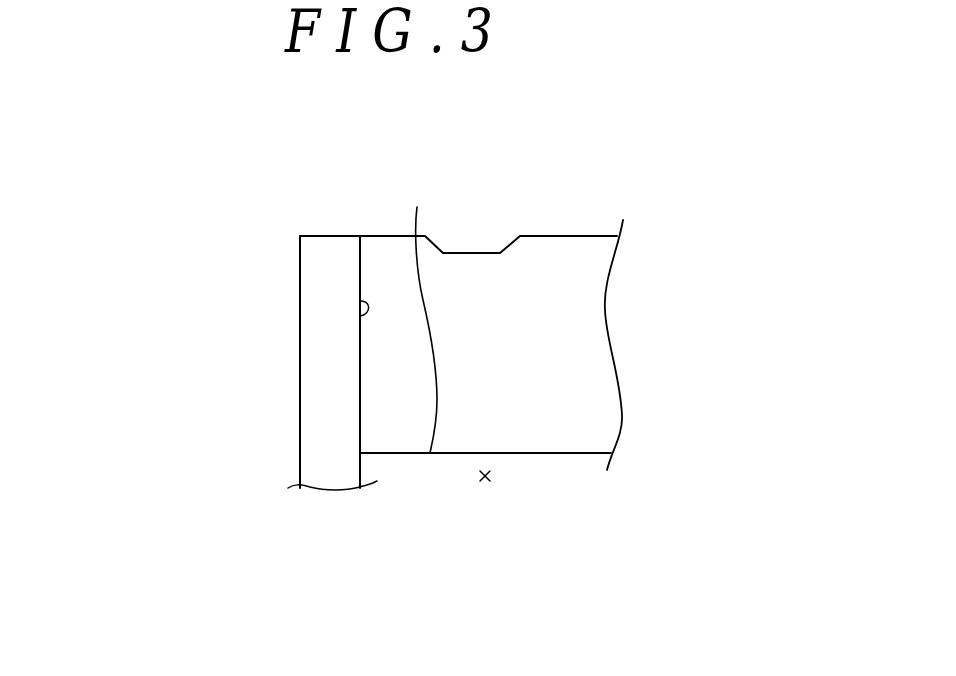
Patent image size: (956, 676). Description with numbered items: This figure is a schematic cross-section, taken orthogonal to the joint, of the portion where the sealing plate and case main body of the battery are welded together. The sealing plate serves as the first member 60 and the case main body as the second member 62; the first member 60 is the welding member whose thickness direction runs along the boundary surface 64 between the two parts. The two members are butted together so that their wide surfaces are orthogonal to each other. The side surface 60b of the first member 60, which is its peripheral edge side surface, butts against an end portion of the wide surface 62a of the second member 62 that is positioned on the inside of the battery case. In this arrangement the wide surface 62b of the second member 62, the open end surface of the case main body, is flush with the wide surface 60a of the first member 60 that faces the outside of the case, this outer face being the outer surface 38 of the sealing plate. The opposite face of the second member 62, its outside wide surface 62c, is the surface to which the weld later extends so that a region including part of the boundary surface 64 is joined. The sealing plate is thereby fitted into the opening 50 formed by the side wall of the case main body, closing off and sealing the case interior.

The first member 60 is at (555, 247).
The second member 62 is at (313, 256).
The wide surface of the first member 60a is at (400, 230).
The side surface of the first member 60b is at (360, 412).
The outer surface of the sealing plate 38 is at (373, 234).
The wide surface of the second member 62b is at (315, 234).
The wide surface of the second member 62a is at (360, 312).
The outside wide surface 62c is at (300, 411).
The boundary surface 64 is at (360, 364).
The opening 50 is at (481, 483).